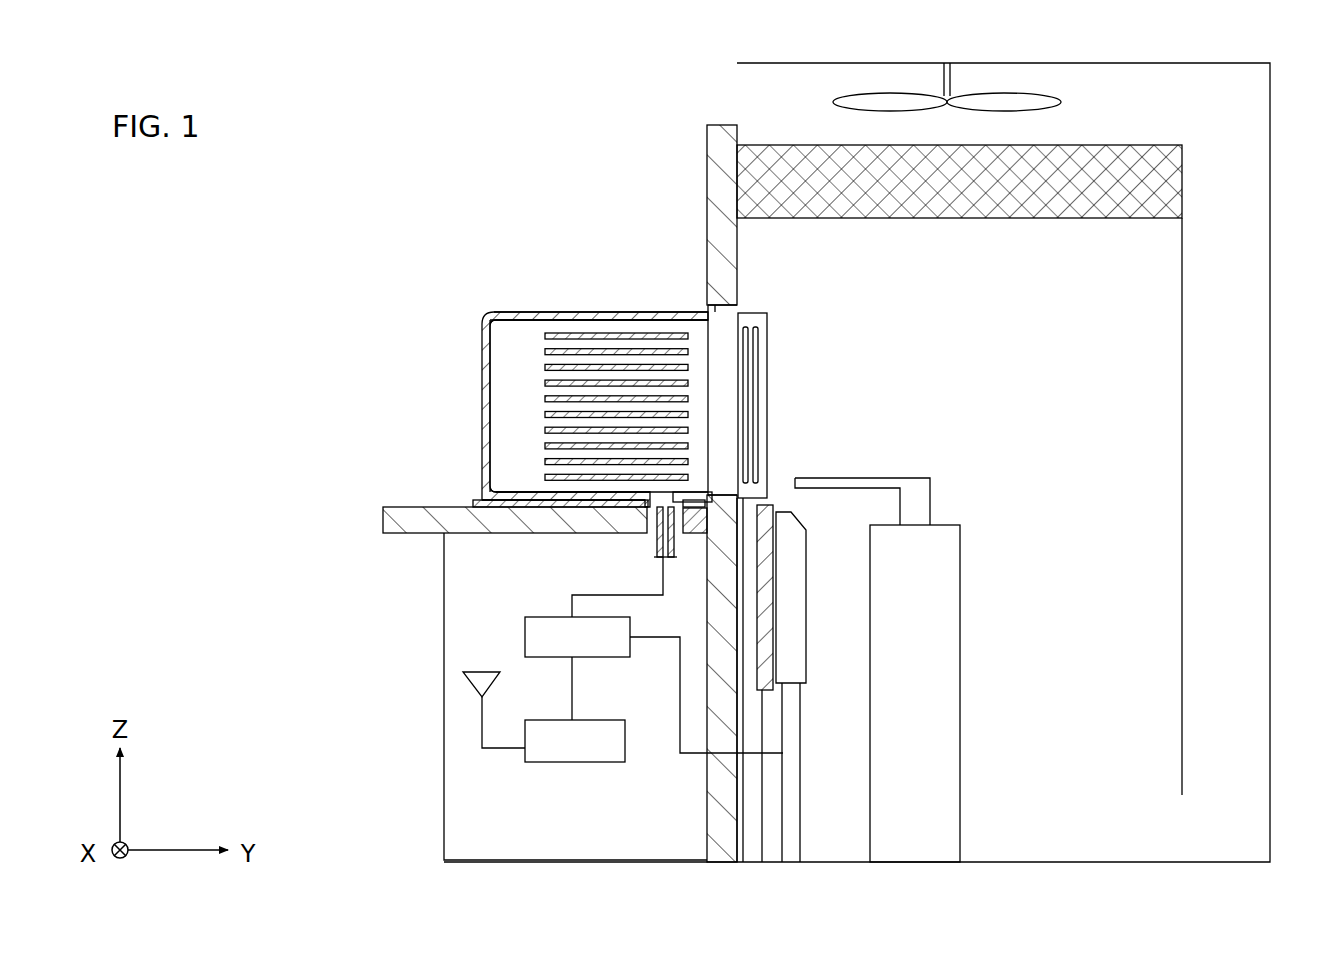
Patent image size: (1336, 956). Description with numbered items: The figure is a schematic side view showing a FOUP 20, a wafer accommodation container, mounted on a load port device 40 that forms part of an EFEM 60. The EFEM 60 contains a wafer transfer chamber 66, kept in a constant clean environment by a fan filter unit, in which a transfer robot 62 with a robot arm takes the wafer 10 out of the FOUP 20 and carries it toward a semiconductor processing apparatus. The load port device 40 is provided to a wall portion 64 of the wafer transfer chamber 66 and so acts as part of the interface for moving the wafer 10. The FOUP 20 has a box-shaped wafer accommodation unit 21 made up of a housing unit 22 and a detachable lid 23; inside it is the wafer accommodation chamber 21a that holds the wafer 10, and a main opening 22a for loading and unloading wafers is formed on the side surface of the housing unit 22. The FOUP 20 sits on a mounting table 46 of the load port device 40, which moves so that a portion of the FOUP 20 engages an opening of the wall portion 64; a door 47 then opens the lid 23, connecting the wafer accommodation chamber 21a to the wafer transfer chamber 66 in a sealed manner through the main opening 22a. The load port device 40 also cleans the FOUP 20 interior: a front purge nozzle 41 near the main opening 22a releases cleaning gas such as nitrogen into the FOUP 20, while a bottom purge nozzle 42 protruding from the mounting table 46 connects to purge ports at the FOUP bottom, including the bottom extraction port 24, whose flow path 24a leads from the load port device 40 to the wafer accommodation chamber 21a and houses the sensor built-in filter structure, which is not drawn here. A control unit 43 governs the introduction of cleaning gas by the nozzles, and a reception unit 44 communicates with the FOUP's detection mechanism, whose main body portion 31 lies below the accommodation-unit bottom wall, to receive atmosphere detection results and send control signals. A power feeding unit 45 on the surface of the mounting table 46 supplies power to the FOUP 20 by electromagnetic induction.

The wafer 10 is at (605, 330).
The FOUP 20 is at (466, 290).
The wafer accommodation unit 21 is at (680, 300).
The wafer accommodation chamber 21a is at (512, 345).
The housing unit 22 is at (482, 355).
The main opening 22a is at (725, 350).
The lid 23 is at (745, 515).
The bottom extraction port 24 is at (667, 500).
The flow path 24a is at (660, 490).
The main body portion 31 is at (702, 518).
The load port device 40 is at (468, 772).
The front purge nozzle 41 is at (770, 386).
The bottom purge nozzle 42 is at (655, 540).
The control unit 43 is at (612, 658).
The reception unit 44 is at (583, 762).
The power feeding unit 45 is at (702, 508).
The mounting table 46 is at (385, 516).
The door 47 is at (790, 620).
The EFEM 60 is at (1222, 88).
The transfer robot 62 is at (930, 586).
The wall portion 64 is at (722, 212).
The wafer transfer chamber 66 is at (1071, 310).